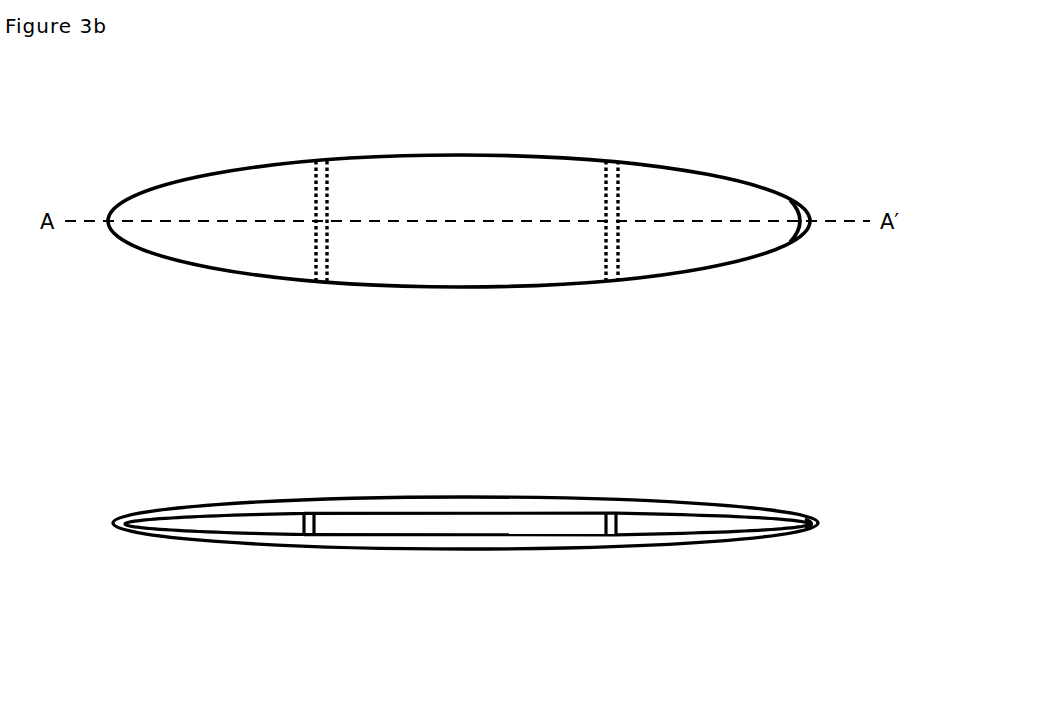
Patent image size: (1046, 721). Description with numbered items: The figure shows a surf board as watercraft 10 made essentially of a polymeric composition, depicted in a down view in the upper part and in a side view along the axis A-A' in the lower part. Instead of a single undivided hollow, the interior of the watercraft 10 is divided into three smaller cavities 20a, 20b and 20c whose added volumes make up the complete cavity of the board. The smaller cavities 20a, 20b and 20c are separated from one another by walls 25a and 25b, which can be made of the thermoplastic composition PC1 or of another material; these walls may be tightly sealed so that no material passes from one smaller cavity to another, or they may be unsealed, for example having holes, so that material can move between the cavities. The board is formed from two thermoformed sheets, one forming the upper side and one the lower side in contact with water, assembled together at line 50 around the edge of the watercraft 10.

The watercraft 10 is at (120, 176).
The smaller cavity 20a is at (250, 524).
The smaller cavity 20b is at (437, 524).
The smaller cavity 20c is at (679, 522).
The wall 25a is at (331, 178).
The wall 25b is at (621, 175).
The line 50 is at (806, 231).